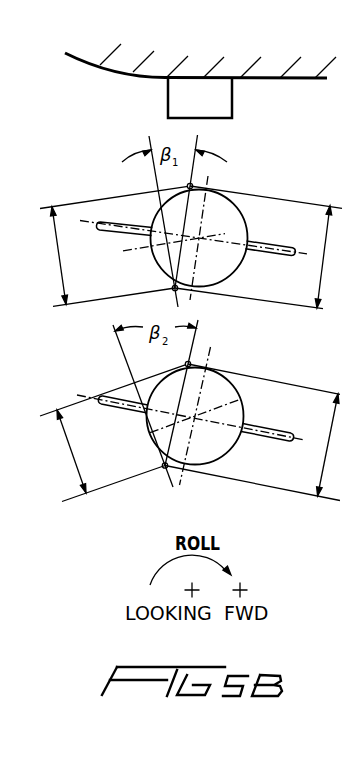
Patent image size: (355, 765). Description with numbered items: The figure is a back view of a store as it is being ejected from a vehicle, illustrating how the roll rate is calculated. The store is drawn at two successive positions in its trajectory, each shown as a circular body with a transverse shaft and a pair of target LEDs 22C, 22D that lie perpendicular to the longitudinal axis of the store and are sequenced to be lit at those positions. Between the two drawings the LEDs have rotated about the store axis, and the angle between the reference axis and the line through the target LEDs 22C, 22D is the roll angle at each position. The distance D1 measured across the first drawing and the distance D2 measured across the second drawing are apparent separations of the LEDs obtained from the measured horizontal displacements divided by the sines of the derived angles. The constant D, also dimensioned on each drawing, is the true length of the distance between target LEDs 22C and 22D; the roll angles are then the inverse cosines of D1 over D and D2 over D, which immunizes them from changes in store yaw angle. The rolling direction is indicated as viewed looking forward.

The target LED 22C is at (193, 185).
The target LED 22D is at (175, 291).
The constant D is at (327, 351).
The distance D1 is at (58, 256).
The distance D2 is at (71, 451).